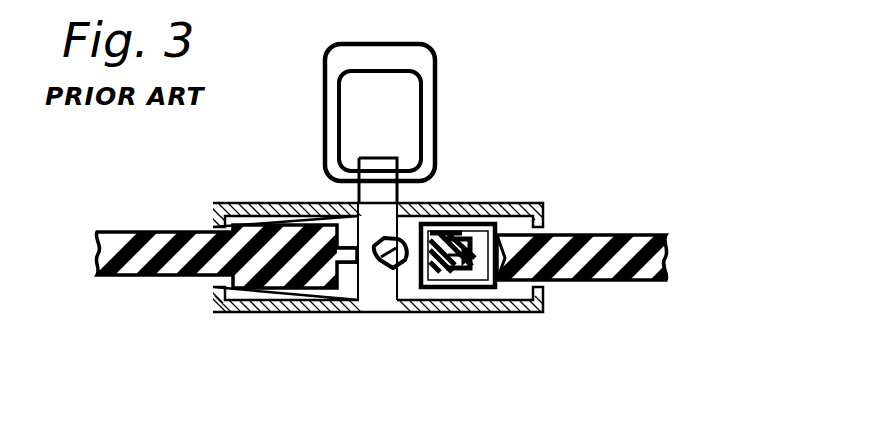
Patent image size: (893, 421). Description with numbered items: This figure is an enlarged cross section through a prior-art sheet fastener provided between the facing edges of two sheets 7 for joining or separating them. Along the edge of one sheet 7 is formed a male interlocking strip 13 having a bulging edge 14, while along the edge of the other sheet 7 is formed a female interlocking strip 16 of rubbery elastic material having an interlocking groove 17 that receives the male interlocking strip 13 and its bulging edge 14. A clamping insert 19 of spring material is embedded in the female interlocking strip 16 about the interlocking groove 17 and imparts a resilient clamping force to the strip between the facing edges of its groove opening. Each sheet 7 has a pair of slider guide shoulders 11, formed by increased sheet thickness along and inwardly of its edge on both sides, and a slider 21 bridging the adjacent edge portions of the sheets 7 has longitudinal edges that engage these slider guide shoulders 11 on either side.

The sheet 7 is at (155, 272).
The slider guide shoulder 11 is at (212, 228).
The male interlocking strip 13 is at (348, 258).
The bulging edge 14 is at (393, 258).
The female interlocking strip 16 is at (512, 235).
The interlocking groove 17 is at (440, 256).
The clamping insert 19 is at (462, 268).
The slider 21 is at (238, 210).